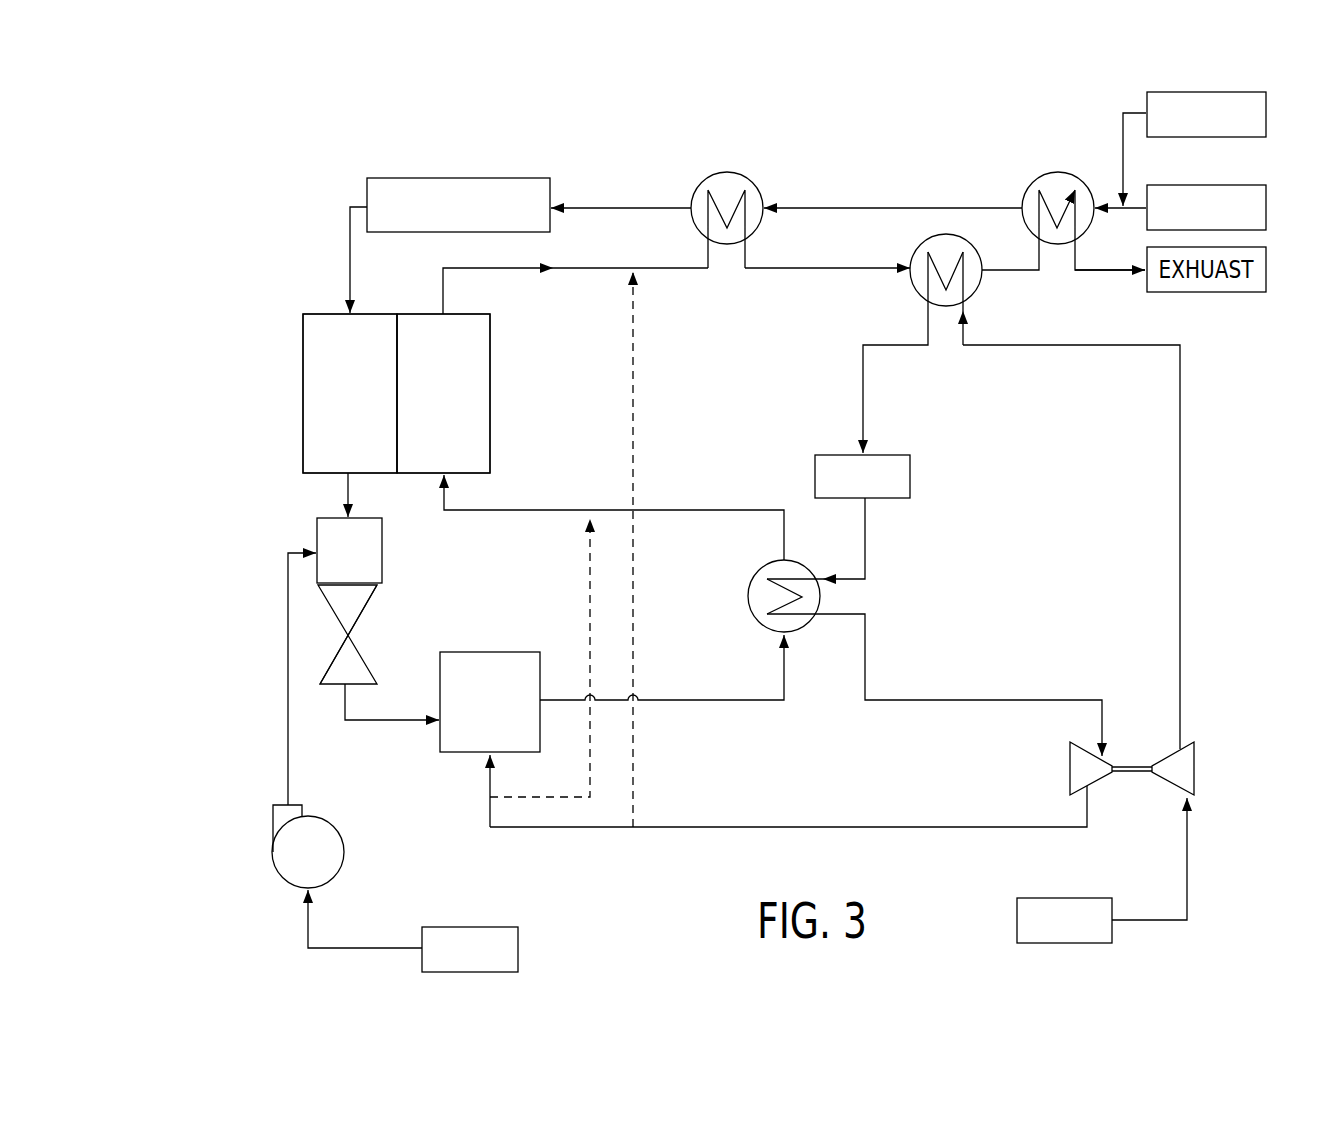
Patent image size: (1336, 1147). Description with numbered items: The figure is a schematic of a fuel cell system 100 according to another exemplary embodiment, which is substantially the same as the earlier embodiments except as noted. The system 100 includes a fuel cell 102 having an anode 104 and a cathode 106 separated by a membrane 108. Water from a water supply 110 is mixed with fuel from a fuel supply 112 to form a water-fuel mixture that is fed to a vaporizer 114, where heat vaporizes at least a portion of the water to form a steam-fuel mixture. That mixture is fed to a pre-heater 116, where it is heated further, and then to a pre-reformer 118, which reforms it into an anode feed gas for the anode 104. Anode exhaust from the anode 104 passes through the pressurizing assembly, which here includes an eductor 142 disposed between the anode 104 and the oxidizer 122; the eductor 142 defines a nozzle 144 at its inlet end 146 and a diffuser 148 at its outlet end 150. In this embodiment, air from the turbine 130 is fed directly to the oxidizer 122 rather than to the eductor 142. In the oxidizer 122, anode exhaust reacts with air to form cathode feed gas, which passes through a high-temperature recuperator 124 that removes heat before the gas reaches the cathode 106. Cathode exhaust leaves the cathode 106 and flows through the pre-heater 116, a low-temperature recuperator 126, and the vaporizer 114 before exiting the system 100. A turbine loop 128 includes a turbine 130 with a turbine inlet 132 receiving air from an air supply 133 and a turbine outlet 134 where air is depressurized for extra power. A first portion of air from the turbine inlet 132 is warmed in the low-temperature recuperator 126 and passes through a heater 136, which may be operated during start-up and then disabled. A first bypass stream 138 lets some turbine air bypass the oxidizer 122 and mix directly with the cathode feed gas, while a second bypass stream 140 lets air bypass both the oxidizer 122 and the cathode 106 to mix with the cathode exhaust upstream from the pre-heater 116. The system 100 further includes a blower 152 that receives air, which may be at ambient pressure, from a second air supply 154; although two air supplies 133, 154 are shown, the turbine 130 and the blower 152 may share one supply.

The fuel cell system 100 is at (328, 136).
The fuel cell 102 is at (414, 369).
The anode 104 is at (328, 355).
The cathode 106 is at (470, 362).
The membrane 108 is at (400, 343).
The water supply 110 is at (1266, 208).
The fuel supply 112 is at (1266, 115).
The vaporizer 114 is at (1058, 172).
The pre-heater 116 is at (727, 172).
The pre-reformer 118 is at (460, 178).
The oxidizer 122 is at (512, 753).
The high-temperature recuperator 124 is at (748, 597).
The low-temperature recuperator 126 is at (977, 290).
The turbine loop 128 is at (1180, 485).
The turbine 130 is at (1133, 767).
The turbine inlet 132 is at (1185, 770).
The air supply 133 is at (1063, 898).
The turbine outlet 134 is at (1083, 772).
The heater 136 is at (935, 462).
The first bypass stream 138 is at (590, 630).
The second bypass stream 140 is at (635, 610).
The eductor 142 is at (319, 641).
The nozzle 144 is at (348, 605).
The inlet end 146 is at (395, 556).
The diffuser 148 is at (348, 657).
The outlet end 150 is at (334, 694).
The blower 152 is at (340, 835).
The air supply 154 is at (472, 927).